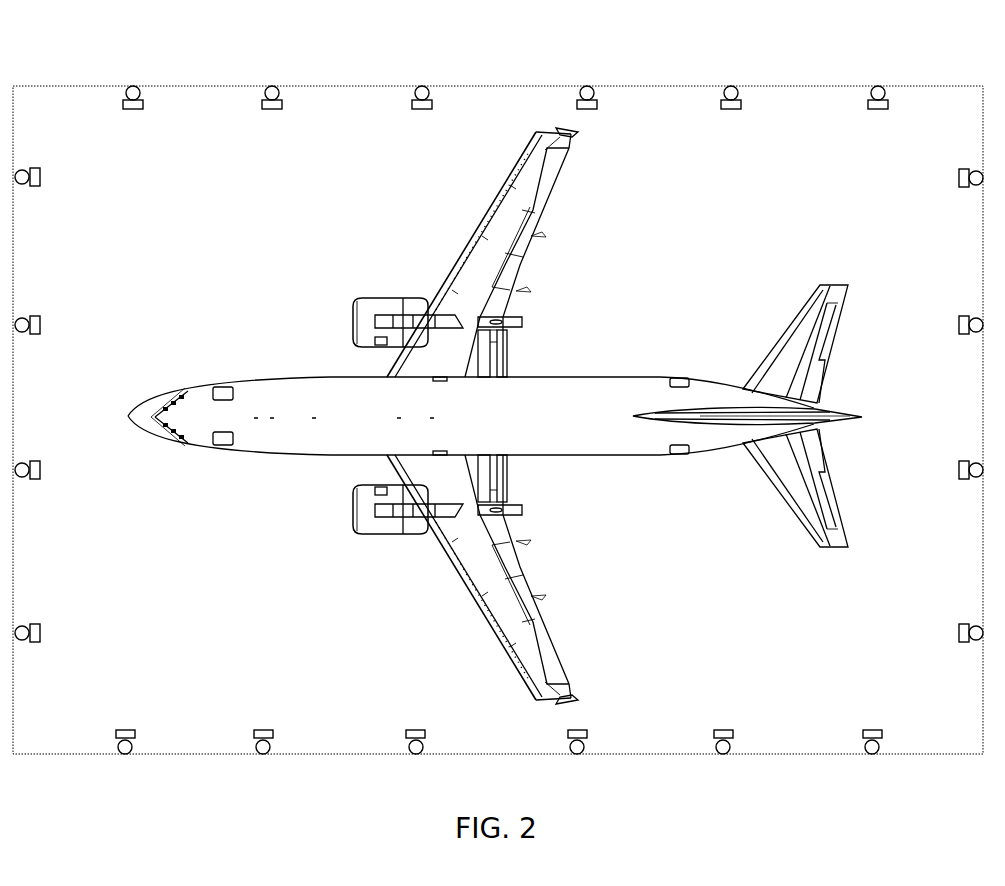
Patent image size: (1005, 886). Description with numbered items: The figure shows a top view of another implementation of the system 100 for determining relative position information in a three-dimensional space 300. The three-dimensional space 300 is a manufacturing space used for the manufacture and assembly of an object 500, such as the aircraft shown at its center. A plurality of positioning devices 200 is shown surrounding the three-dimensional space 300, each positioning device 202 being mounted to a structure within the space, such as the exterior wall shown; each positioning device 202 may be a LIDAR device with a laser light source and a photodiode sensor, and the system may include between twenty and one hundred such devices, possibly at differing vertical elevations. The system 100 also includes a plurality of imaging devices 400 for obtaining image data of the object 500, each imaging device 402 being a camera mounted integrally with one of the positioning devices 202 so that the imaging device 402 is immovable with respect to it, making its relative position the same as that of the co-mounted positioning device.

The system 100 is at (779, 73).
The plurality of positioning devices 200 is at (505, 70).
The positioning device 202 is at (136, 87).
The imaging device 402 is at (143, 108).
The three-dimensional space 300 is at (345, 633).
The plurality of imaging devices 400 is at (38, 462).
The object 500 is at (580, 468).